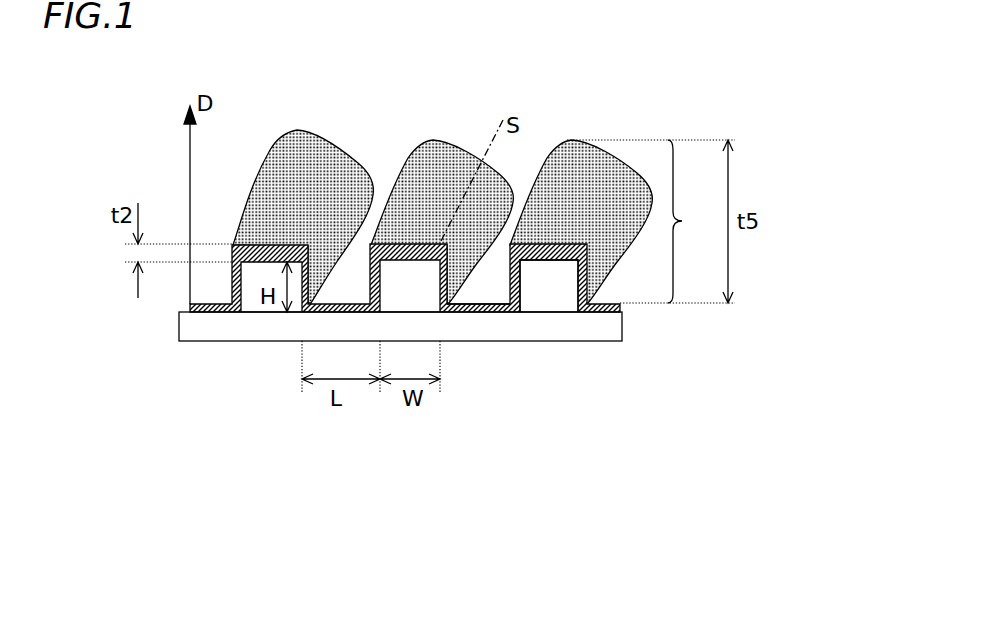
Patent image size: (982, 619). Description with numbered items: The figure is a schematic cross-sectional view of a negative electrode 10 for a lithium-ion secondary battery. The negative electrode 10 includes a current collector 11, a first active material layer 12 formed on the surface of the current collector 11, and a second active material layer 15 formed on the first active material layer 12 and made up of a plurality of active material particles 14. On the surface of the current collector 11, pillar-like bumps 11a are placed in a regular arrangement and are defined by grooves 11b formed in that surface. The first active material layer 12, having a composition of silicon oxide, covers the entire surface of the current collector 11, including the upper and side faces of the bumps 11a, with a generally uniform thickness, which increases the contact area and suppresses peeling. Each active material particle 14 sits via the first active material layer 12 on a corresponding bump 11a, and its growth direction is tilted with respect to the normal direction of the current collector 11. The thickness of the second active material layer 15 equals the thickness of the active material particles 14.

The negative electrode 10 is at (637, 86).
The current collector 11 is at (188, 328).
The bump 11a is at (563, 302).
The groove 11b is at (484, 297).
The first active material layer 12 is at (623, 311).
The active material particle 14 is at (612, 158).
The second active material layer 15 is at (691, 221).